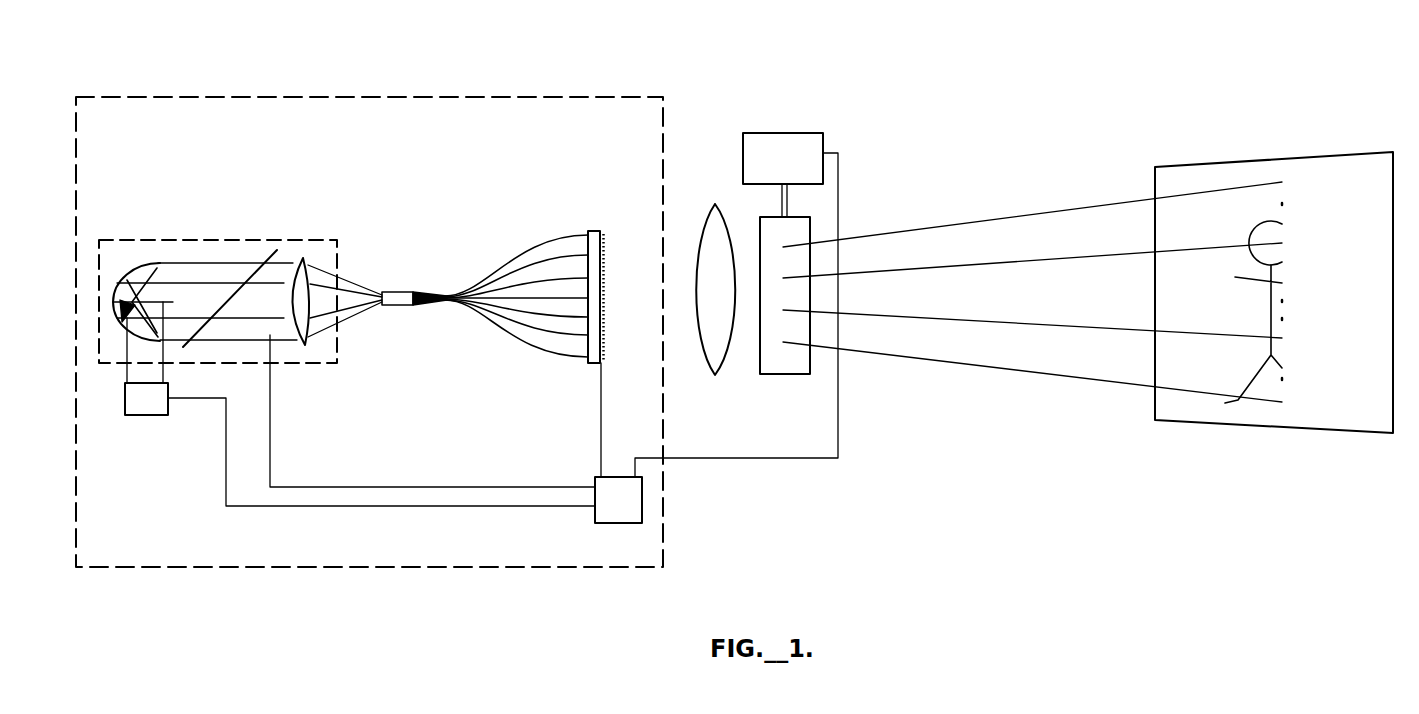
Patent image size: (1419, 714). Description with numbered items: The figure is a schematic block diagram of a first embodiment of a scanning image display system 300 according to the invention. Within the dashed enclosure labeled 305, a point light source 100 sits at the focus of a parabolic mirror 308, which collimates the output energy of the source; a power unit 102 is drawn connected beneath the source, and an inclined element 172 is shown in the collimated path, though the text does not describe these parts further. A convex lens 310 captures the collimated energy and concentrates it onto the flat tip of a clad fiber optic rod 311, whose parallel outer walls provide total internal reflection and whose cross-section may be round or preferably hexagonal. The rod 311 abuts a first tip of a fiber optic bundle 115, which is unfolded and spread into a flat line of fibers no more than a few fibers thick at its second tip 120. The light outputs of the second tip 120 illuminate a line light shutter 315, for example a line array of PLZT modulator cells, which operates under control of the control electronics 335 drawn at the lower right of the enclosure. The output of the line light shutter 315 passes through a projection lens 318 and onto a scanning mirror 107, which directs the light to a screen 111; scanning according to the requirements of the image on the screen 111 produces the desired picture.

The scanning image display system 300 is at (725, 68).
The light source assembly 305 is at (470, 95).
The parabolic mirror 308 is at (130, 268).
The point light source 100 is at (170, 288).
The mirror 172 is at (272, 250).
The convex lens 310 is at (304, 258).
The clad fiber optic rod 311 is at (388, 292).
The fiber optic bundle 115 is at (418, 292).
The second tip 120 is at (587, 232).
The line light shutter 315 is at (598, 231).
The projection lens 318 is at (715, 207).
The scanning mirror 107 is at (810, 217).
The screen 111 is at (1222, 167).
The lamp power supply 102 is at (148, 405).
The control electronics 335 is at (612, 512).